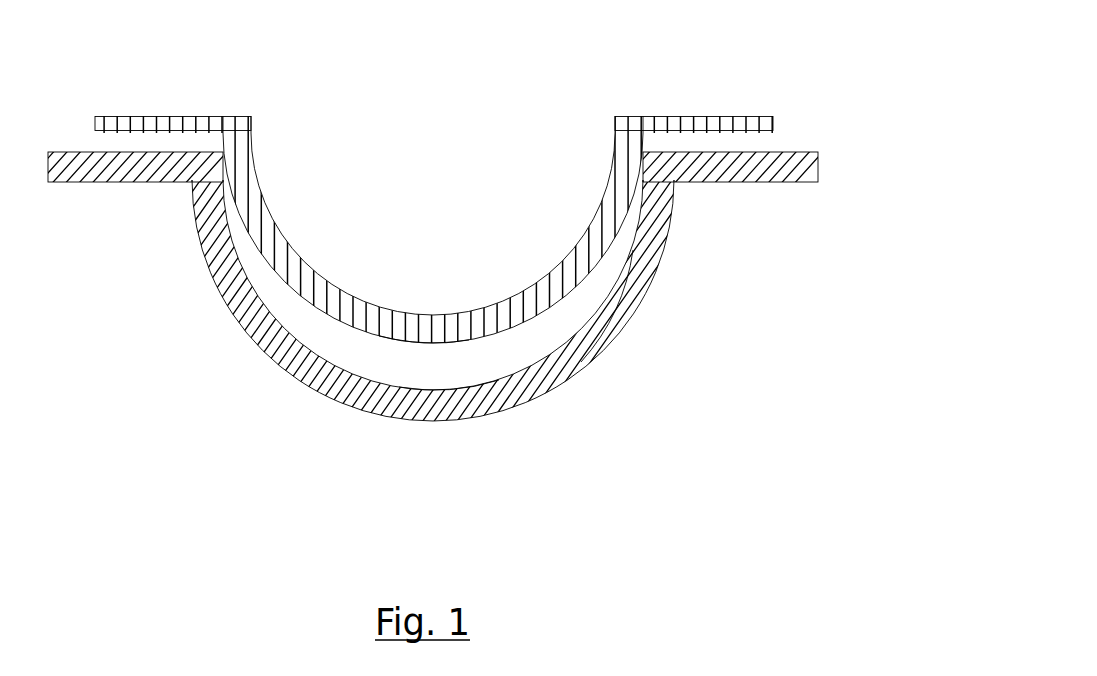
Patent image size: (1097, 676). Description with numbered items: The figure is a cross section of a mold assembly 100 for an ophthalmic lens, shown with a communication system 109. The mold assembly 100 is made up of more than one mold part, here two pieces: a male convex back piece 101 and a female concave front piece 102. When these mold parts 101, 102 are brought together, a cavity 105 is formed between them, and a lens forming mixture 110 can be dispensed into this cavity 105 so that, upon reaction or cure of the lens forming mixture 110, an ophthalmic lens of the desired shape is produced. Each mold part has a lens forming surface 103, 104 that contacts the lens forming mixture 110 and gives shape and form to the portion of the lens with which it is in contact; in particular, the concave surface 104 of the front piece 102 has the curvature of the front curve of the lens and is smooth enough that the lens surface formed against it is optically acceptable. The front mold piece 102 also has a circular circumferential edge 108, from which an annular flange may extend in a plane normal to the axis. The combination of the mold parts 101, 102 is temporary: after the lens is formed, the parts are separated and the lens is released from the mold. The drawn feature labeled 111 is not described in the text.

The mold assembly 100 is at (371, 140).
The male convex piece (back piece) 101 is at (598, 205).
The female concave piece (front piece) 102 is at (300, 372).
The lens forming surface 103 is at (467, 323).
The concave surface 104 is at (514, 393).
The cavity 105 is at (359, 362).
The circular circumferential edge 108 is at (728, 182).
The communication system 109 is at (602, 289).
The lens forming mixture 110 is at (418, 361).
The inner surface of second layer bottom 111 is at (465, 385).